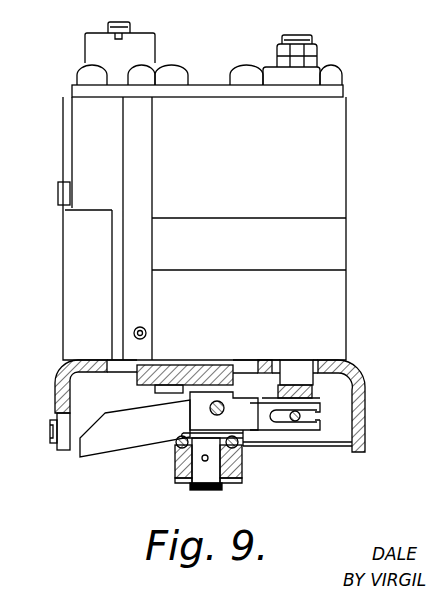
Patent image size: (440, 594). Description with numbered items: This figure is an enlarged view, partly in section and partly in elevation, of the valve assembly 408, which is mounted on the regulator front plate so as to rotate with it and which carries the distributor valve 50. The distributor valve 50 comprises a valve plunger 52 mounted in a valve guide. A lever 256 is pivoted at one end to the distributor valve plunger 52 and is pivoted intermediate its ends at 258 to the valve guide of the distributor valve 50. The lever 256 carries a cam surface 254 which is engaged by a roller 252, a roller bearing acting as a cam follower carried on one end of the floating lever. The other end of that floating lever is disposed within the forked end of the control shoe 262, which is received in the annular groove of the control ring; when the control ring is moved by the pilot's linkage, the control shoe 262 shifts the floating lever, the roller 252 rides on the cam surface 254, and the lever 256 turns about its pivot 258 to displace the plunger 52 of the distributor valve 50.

The distributor valve 50 is at (310, 77).
The valve assembly 408 is at (416, 253).
The cam surface 254 is at (198, 385).
The valve plunger 52 is at (313, 393).
The lever 256 is at (110, 442).
The pivot 258 is at (224, 406).
The roller 252 is at (176, 456).
The control shoe 262 is at (228, 448).